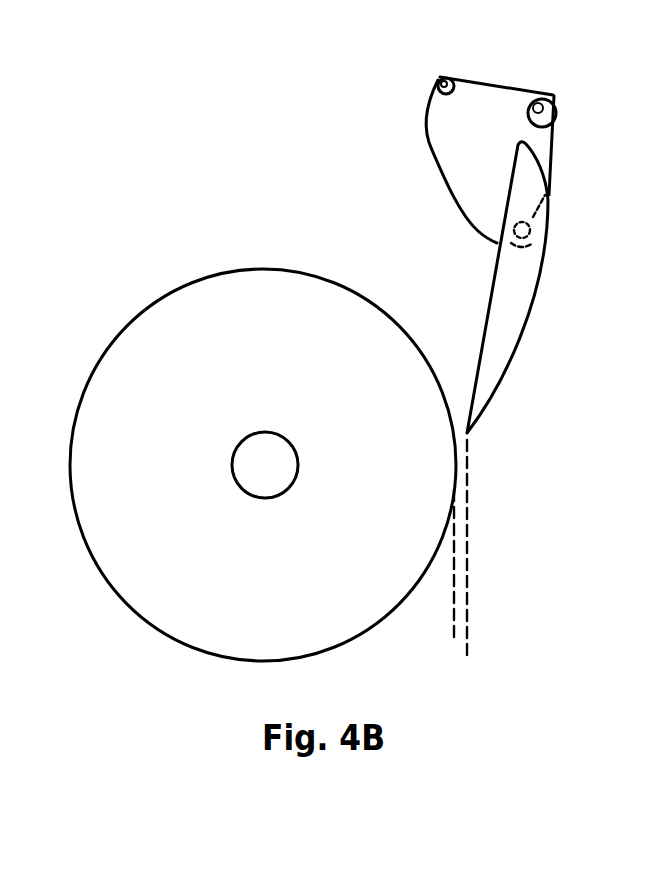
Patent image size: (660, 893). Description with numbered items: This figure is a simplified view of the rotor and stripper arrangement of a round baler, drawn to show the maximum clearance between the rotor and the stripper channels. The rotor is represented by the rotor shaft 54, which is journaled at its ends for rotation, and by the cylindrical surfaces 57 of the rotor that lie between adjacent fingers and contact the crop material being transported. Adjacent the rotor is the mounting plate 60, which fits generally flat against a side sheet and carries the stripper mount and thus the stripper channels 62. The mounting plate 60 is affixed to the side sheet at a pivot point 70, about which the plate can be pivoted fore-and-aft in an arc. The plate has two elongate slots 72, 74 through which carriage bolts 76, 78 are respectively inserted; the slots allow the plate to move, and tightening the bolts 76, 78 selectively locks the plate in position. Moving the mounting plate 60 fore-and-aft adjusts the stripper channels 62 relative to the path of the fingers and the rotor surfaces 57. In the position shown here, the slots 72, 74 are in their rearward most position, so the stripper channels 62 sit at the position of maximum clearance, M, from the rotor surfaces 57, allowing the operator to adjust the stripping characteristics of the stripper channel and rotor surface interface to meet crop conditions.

The rotor shaft 54 is at (268, 448).
The cylindrical surfaces 57 is at (140, 308).
The mounting plate 60 is at (446, 190).
The stripper channels 62 is at (528, 290).
The pivot point 70 is at (527, 229).
The elongate slot 72 is at (463, 80).
The elongate slot 74 is at (558, 96).
The carriage bolt 76 is at (440, 88).
The carriage bolt 78 is at (553, 125).
The maximum clearance M is at (408, 668).